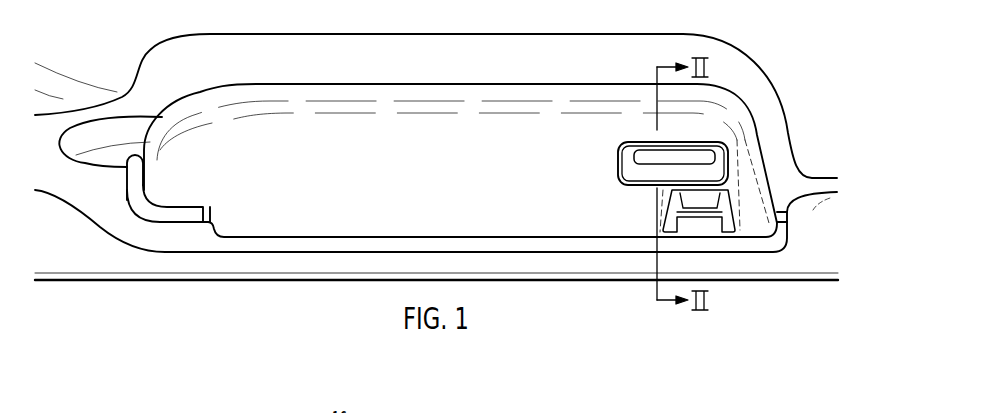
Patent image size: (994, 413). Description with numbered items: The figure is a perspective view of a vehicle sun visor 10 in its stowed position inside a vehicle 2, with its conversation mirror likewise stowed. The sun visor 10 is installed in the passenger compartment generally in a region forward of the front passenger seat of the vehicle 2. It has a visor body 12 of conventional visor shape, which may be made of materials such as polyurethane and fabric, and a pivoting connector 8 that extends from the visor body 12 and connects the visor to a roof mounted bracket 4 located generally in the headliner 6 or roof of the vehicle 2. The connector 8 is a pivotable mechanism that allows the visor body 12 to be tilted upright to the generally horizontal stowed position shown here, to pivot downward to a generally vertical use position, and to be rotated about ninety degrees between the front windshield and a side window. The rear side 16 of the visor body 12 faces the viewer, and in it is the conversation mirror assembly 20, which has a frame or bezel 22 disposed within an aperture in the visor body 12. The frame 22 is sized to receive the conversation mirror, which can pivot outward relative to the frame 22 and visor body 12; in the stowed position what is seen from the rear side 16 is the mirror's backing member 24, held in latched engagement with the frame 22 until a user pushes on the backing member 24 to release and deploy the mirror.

The vehicle 2 is at (96, 283).
The roof mounted bracket 4 is at (110, 173).
The headliner 6 is at (180, 237).
The pivoting connector 8 is at (153, 207).
The vehicle sun visor 10 is at (150, 28).
The visor body 12 is at (604, 80).
The rear side 16 is at (432, 175).
The conversation mirror assembly 20 is at (703, 133).
The frame 22 is at (710, 167).
The backing member 24 is at (727, 183).